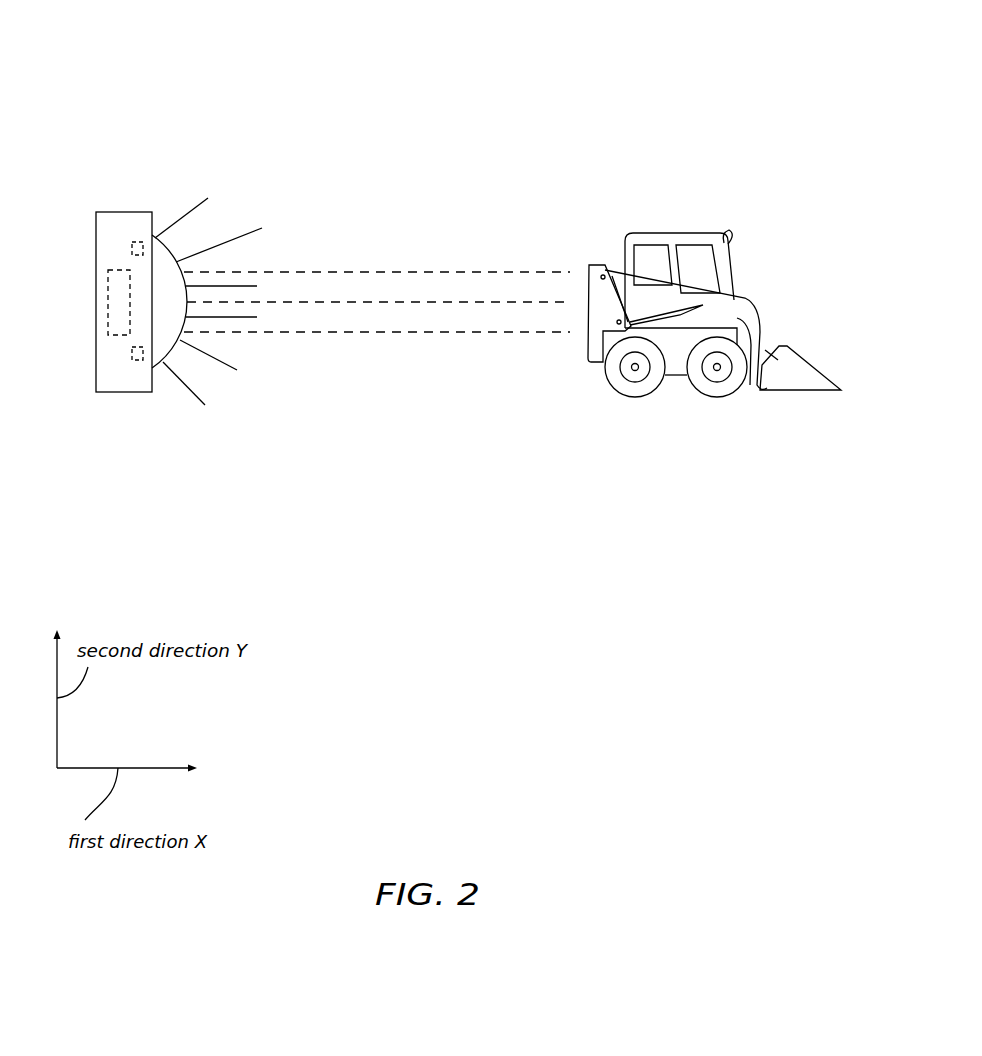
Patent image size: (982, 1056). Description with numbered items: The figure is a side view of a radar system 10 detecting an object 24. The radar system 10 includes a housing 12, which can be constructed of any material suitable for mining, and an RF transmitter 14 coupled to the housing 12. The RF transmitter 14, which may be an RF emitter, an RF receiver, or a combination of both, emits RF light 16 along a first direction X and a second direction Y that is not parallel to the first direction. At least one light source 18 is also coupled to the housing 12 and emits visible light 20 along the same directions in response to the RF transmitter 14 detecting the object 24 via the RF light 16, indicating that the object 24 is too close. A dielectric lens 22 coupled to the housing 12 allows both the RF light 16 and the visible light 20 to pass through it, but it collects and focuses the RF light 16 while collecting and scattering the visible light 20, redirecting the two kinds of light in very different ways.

The radar system 10 is at (68, 96).
The housing 12 is at (108, 247).
The RF transmitter 14 is at (118, 337).
The RF light 16 is at (536, 339).
The light source 18 is at (137, 240).
The visible light 20 is at (240, 238).
The dielectric lens 22 is at (170, 256).
The object 24 is at (650, 230).